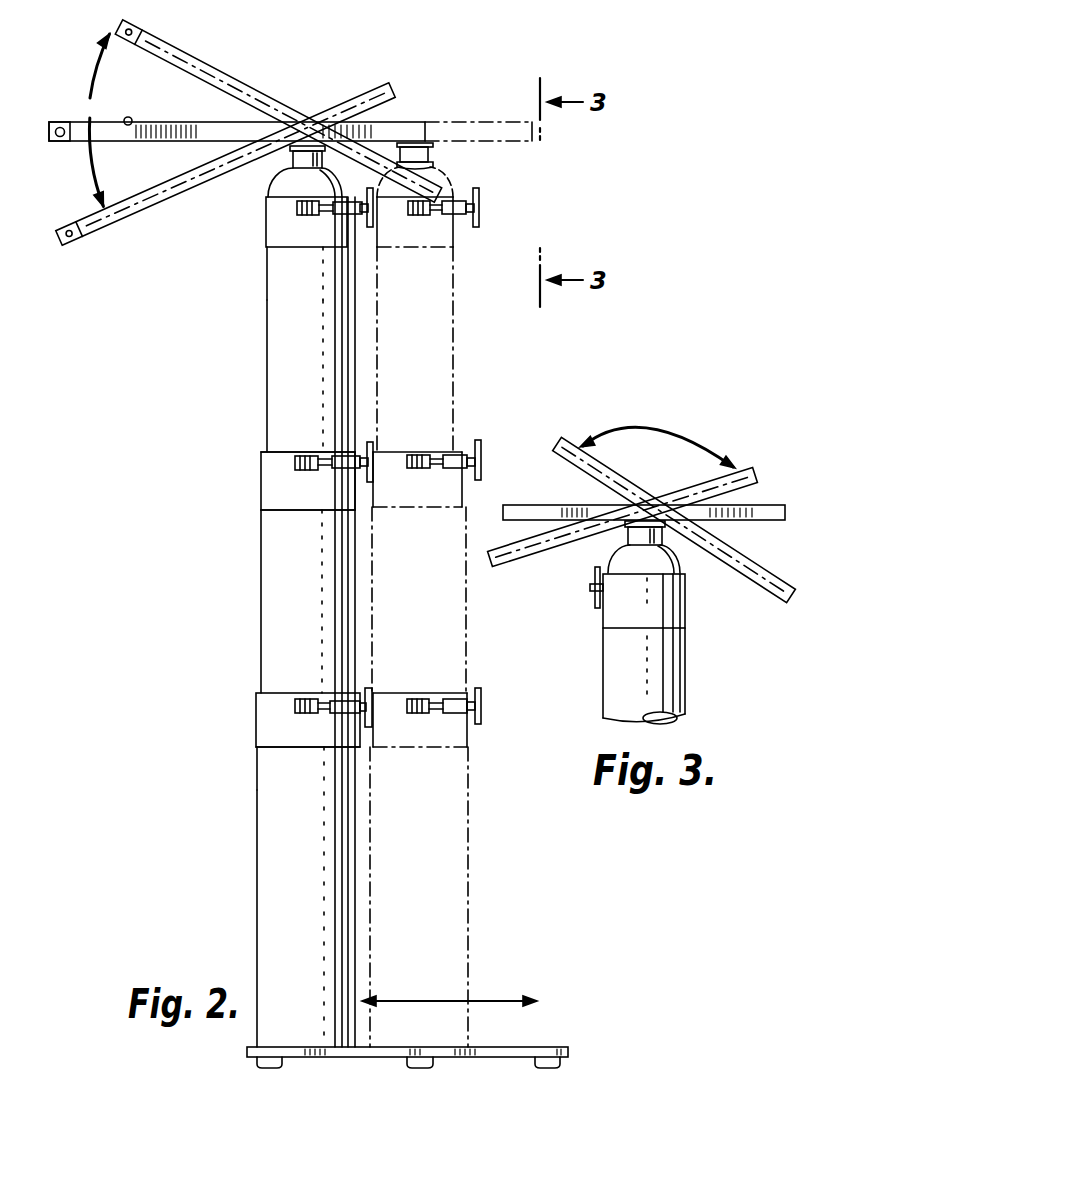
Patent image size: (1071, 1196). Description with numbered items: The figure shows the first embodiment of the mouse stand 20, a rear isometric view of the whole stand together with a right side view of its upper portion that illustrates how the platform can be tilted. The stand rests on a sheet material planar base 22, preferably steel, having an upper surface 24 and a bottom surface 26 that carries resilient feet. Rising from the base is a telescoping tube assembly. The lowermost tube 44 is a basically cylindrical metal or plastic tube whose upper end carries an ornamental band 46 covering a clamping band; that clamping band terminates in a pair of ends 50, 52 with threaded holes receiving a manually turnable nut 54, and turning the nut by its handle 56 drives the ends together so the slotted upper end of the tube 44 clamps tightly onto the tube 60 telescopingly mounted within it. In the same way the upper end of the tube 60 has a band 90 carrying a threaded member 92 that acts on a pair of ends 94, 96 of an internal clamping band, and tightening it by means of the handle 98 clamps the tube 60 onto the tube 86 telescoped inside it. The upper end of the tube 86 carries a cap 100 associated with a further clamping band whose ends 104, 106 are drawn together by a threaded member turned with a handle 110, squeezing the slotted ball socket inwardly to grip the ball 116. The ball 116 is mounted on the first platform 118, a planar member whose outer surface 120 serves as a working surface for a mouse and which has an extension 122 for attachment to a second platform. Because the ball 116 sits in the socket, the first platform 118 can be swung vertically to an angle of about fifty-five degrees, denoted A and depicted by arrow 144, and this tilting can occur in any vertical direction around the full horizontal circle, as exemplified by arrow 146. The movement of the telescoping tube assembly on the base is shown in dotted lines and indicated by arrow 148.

In FIG. 2, the mouse stand 20 is at (522, 221).
In FIG. 2, the base 22 is at (444, 1031).
In FIG. 2, the upper surface 24 is at (507, 1047).
In FIG. 2, the bottom surface 26 is at (562, 1068).
In FIG. 2, the tube 44 is at (262, 838).
In FIG. 2, the ornamental band 46 is at (266, 740).
In FIG. 2, the end of clamping band 50 is at (292, 707).
In FIG. 2, the end of clamping band 52 is at (314, 717).
In FIG. 2, the nut 54 is at (330, 690).
In FIG. 2, the handle 56 is at (376, 693).
In FIG. 2, the tube 60 is at (272, 600).
In FIG. 2, the tube 86 is at (282, 372).
In FIG. 3, the tube 86 is at (685, 672).
In FIG. 2, the band 90 is at (272, 480).
In FIG. 2, the threaded member 92 is at (325, 452).
In FIG. 2, the end of clamping band 94 is at (296, 463).
In FIG. 2, the end of clamping band 96 is at (310, 472).
In FIG. 2, the handle 98 is at (376, 443).
In FIG. 2, the cap 100 is at (278, 263).
In FIG. 3, the cap 100 is at (685, 603).
In FIG. 2, the end of clamping band 104 is at (297, 208).
In FIG. 2, the end of clamping band 106 is at (303, 233).
In FIG. 2, the handle 110 is at (458, 246).
In FIG. 3, the handle 110 is at (595, 602).
In FIG. 2, the ball 116 is at (270, 180).
In FIG. 3, the ball 116 is at (590, 558).
In FIG. 2, the first platform 118 is at (228, 123).
In FIG. 3, the first platform 118 is at (578, 505).
In FIG. 2, the outer surface 120 is at (128, 127).
In FIG. 2, the extension 122 is at (67, 143).
In FIG. 2, the arrow 144 is at (96, 64).
In FIG. 3, the arrow 146 is at (675, 432).
In FIG. 2, the arrow 148 is at (493, 997).